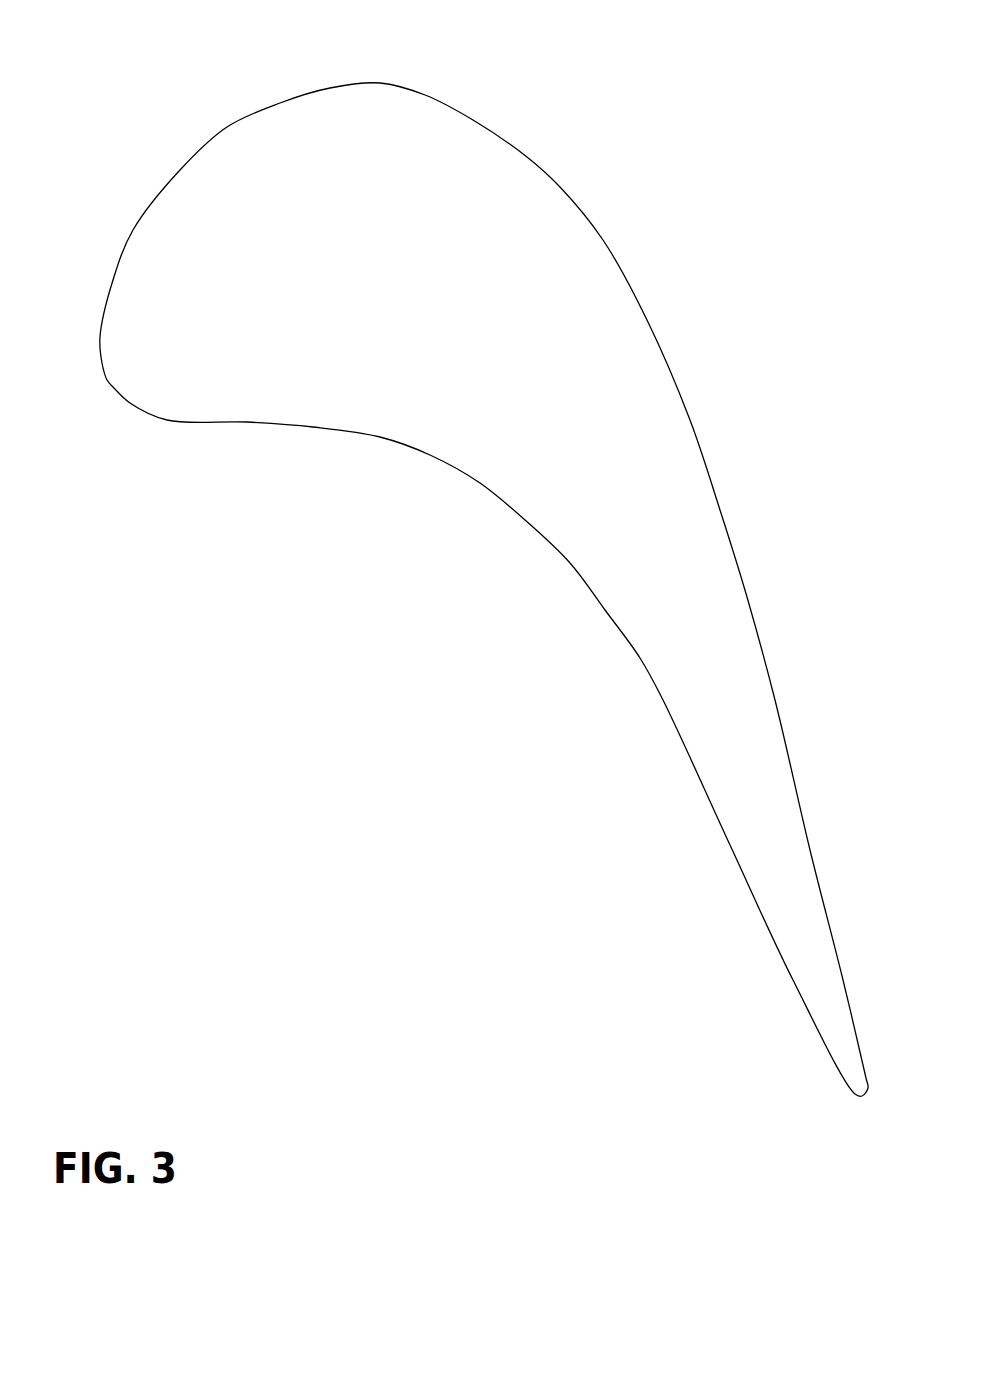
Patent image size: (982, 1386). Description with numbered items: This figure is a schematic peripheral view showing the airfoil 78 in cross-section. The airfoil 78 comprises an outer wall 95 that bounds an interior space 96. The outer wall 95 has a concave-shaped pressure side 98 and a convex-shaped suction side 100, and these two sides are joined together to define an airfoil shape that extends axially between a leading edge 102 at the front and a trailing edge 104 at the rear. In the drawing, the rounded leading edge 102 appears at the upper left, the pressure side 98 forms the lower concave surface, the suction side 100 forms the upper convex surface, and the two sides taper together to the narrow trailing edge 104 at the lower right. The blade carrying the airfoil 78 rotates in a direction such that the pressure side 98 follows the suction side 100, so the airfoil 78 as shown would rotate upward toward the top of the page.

The airfoil 78 is at (459, 610).
The outer wall 95 is at (747, 597).
The interior space 96 is at (459, 630).
The pressure side 98 is at (482, 487).
The suction side 100 is at (603, 240).
The leading edge 102 is at (110, 380).
The trailing edge 104 is at (860, 1098).